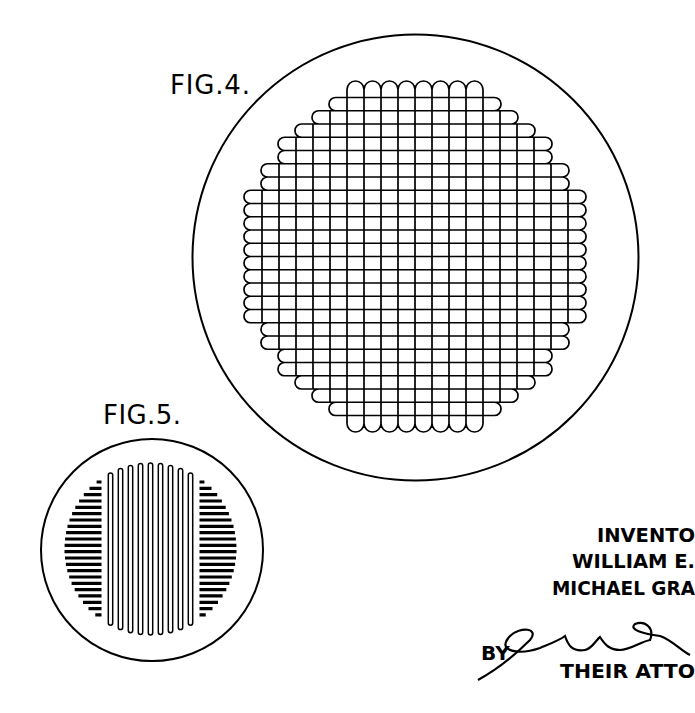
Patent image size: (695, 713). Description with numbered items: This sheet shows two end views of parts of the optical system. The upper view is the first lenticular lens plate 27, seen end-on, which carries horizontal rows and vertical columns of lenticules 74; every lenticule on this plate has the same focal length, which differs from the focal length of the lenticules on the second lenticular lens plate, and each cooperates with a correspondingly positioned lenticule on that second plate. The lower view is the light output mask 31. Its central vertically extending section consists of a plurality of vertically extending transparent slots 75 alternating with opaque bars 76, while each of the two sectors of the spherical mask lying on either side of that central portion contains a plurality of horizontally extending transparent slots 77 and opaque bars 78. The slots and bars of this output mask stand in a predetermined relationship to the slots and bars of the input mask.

In FIG. 4, the first lenticular lens plate 27 is at (604, 133).
In FIG. 4, the lenticules 74 is at (570, 183).
In FIG. 5, the light output mask 31 is at (75, 467).
In FIG. 5, the transparent slots 75 is at (111, 626).
In FIG. 5, the opaque bars 76 is at (173, 632).
In FIG. 5, the transparent slots 77 is at (66, 529).
In FIG. 5, the opaque bars 78 is at (64, 569).